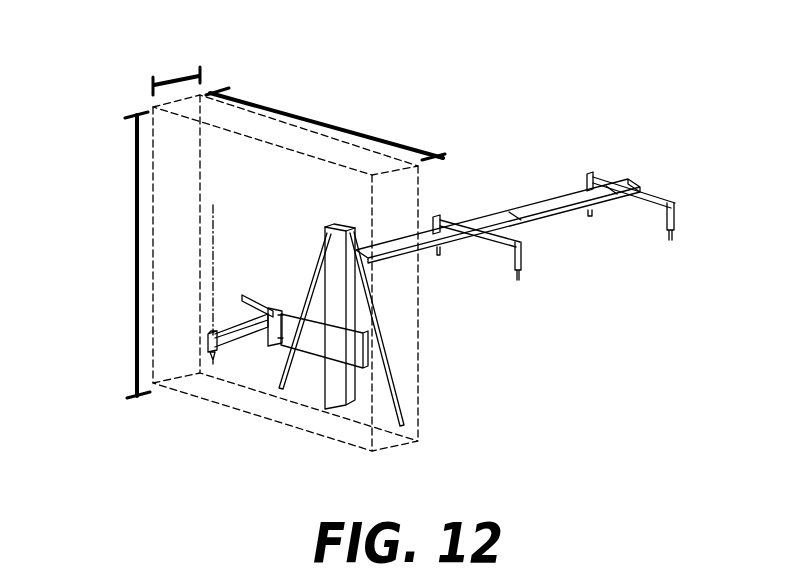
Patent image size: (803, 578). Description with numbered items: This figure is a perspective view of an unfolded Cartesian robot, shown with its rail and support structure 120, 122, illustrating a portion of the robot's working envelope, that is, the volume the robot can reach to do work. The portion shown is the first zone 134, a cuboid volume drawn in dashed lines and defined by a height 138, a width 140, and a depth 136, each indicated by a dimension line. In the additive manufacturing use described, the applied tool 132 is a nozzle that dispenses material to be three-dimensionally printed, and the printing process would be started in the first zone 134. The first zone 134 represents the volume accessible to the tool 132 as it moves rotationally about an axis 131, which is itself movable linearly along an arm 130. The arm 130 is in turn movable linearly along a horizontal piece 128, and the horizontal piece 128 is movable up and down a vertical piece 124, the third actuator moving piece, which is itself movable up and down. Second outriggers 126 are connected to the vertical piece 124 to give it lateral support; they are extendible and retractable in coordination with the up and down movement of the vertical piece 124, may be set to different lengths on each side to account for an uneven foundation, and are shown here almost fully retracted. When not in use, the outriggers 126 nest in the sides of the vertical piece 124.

The tool support system 120 is at (625, 196).
The rail 122 is at (475, 226).
The vertical piece 124 is at (337, 235).
The second outriggers 126 is at (390, 354).
The horizontal piece 128 is at (333, 343).
The arm 130 is at (257, 343).
The axis 131 is at (215, 278).
The tool 132 is at (213, 360).
The Zone 1 134 is at (183, 168).
The depth 136 is at (180, 77).
The height 138 is at (137, 253).
The width 140 is at (312, 124).